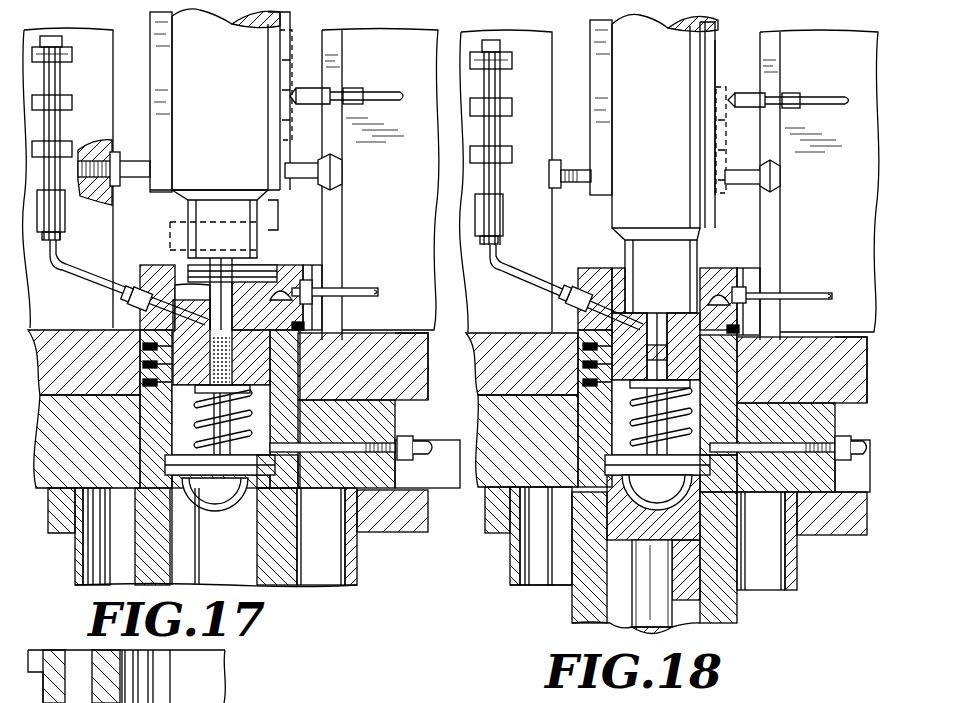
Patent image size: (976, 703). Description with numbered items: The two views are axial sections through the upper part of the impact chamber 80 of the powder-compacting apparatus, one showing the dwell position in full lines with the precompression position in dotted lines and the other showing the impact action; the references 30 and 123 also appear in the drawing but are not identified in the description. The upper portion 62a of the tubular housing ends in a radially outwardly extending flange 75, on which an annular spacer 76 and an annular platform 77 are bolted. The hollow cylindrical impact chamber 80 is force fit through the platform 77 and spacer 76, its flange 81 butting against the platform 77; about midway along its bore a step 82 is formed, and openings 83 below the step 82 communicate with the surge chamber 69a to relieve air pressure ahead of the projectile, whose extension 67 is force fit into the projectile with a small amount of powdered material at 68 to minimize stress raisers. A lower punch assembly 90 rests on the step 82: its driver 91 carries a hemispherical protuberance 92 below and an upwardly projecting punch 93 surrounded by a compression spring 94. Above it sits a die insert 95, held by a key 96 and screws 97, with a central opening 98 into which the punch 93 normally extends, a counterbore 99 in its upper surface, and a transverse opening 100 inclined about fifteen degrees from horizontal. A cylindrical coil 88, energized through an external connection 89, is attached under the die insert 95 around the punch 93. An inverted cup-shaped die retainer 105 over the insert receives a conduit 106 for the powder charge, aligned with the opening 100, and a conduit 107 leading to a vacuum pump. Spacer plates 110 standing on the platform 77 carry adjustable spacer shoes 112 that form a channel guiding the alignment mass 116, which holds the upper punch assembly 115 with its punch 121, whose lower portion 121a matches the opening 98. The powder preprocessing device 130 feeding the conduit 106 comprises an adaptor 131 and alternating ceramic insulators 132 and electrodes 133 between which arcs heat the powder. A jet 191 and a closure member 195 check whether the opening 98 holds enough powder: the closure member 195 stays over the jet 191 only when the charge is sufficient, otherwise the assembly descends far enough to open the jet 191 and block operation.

In FIG. 17, the valve assembly 30 is at (360, 585).
In FIG. 18, the valve assembly 30 is at (503, 578).
In FIG. 17, the upper portion of tubular housing 62a is at (356, 570).
In FIG. 18, the upper portion of tubular housing 62a is at (796, 585).
In FIG. 18, the extension 67 is at (702, 633).
In FIG. 18, the powdered material 68 is at (728, 540).
In FIG. 17, the surge chamber 69a is at (98, 558).
In FIG. 18, the surge chamber 69a is at (550, 573).
In FIG. 17, the flange 75 is at (428, 524).
In FIG. 18, the flange 75 is at (848, 537).
In FIG. 17, the annular spacer 76 is at (396, 476).
In FIG. 18, the annular spacer 76 is at (824, 482).
In FIG. 17, the annular platform 77 is at (405, 343).
In FIG. 18, the annular platform 77 is at (847, 345).
In FIG. 17, the impact chamber 80 is at (290, 586).
In FIG. 18, the impact chamber 80 is at (735, 607).
In FIG. 17, the flange 81 is at (303, 328).
In FIG. 18, the flange 81 is at (740, 330).
In FIG. 17, the step 82 is at (298, 480).
In FIG. 18, the step 82 is at (720, 486).
In FIG. 17, the openings 83 is at (288, 500).
In FIG. 18, the openings 83 is at (735, 503).
In FIG. 17, the cylindrical coil 88 is at (222, 420).
In FIG. 18, the cylindrical coil 88 is at (661, 417).
In FIG. 17, the external connection 89 is at (432, 442).
In FIG. 18, the external connection 89 is at (858, 418).
In FIG. 17, the lower punch assembly 90 is at (166, 459).
In FIG. 18, the lower punch assembly 90 is at (598, 450).
In FIG. 17, the driver 91 is at (165, 462).
In FIG. 18, the driver 91 is at (605, 462).
In FIG. 17, the hemispherical protuberance 92 is at (205, 512).
In FIG. 18, the hemispherical protuberance 92 is at (670, 497).
In FIG. 17, the punch 93 is at (240, 380).
In FIG. 18, the punch 93 is at (632, 393).
In FIG. 17, the compression spring 94 is at (240, 398).
In FIG. 18, the compression spring 94 is at (643, 417).
In FIG. 17, the die insert 95 is at (267, 358).
In FIG. 18, the die insert 95 is at (707, 358).
In FIG. 17, the key 96 is at (140, 345).
In FIG. 18, the key 96 is at (580, 340).
In FIG. 17, the screws 97 is at (140, 362).
In FIG. 18, the screws 97 is at (578, 350).
In FIG. 17, the central opening 98 is at (260, 268).
In FIG. 18, the central opening 98 is at (656, 346).
In FIG. 17, the counterbore 99 is at (305, 262).
In FIG. 18, the counterbore 99 is at (718, 278).
In FIG. 17, the opening 100 is at (176, 268).
In FIG. 18, the opening 100 is at (632, 322).
In FIG. 17, the die retainer 105 is at (318, 284).
In FIG. 18, the die retainer 105 is at (742, 285).
In FIG. 17, the conduit 106 is at (80, 274).
In FIG. 18, the conduit 106 is at (487, 280).
In FIG. 17, the conduit 107 is at (358, 292).
In FIG. 18, the conduit 107 is at (798, 296).
In FIG. 17, the spacer plates 110 is at (86, 40).
In FIG. 18, the spacer plates 110 is at (520, 42).
In FIG. 17, the spacer shoe 112 is at (158, 44).
In FIG. 18, the spacer shoe 112 is at (600, 114).
In FIG. 17, the upper punch assembly 115 is at (186, 213).
In FIG. 18, the upper punch assembly 115 is at (627, 253).
In FIG. 17, the alignment mass 116 is at (244, 86).
In FIG. 18, the alignment mass 116 is at (684, 74).
In FIG. 17, the punch 121 is at (211, 196).
In FIG. 18, the punch 121 is at (660, 238).
In FIG. 17, the lower end portion of punch 121a is at (307, 209).
In FIG. 17, the piston rod 123 is at (223, 247).
In FIG. 18, the piston rod 123 is at (706, 222).
In FIG. 17, the powder preprocessing device 130 is at (86, 121).
In FIG. 18, the powder preprocessing device 130 is at (531, 142).
In FIG. 18, the adaptor 131 is at (528, 212).
In FIG. 17, the ceramic insulator 132 is at (52, 168).
In FIG. 18, the ceramic insulator 132 is at (500, 155).
In FIG. 17, the electrode 133 is at (68, 108).
In FIG. 18, the electrode 133 is at (512, 108).
In FIG. 17, the jet 191 is at (308, 104).
In FIG. 18, the jet 191 is at (752, 97).
In FIG. 17, the closure member 195 is at (292, 40).
In FIG. 18, the closure member 195 is at (722, 112).